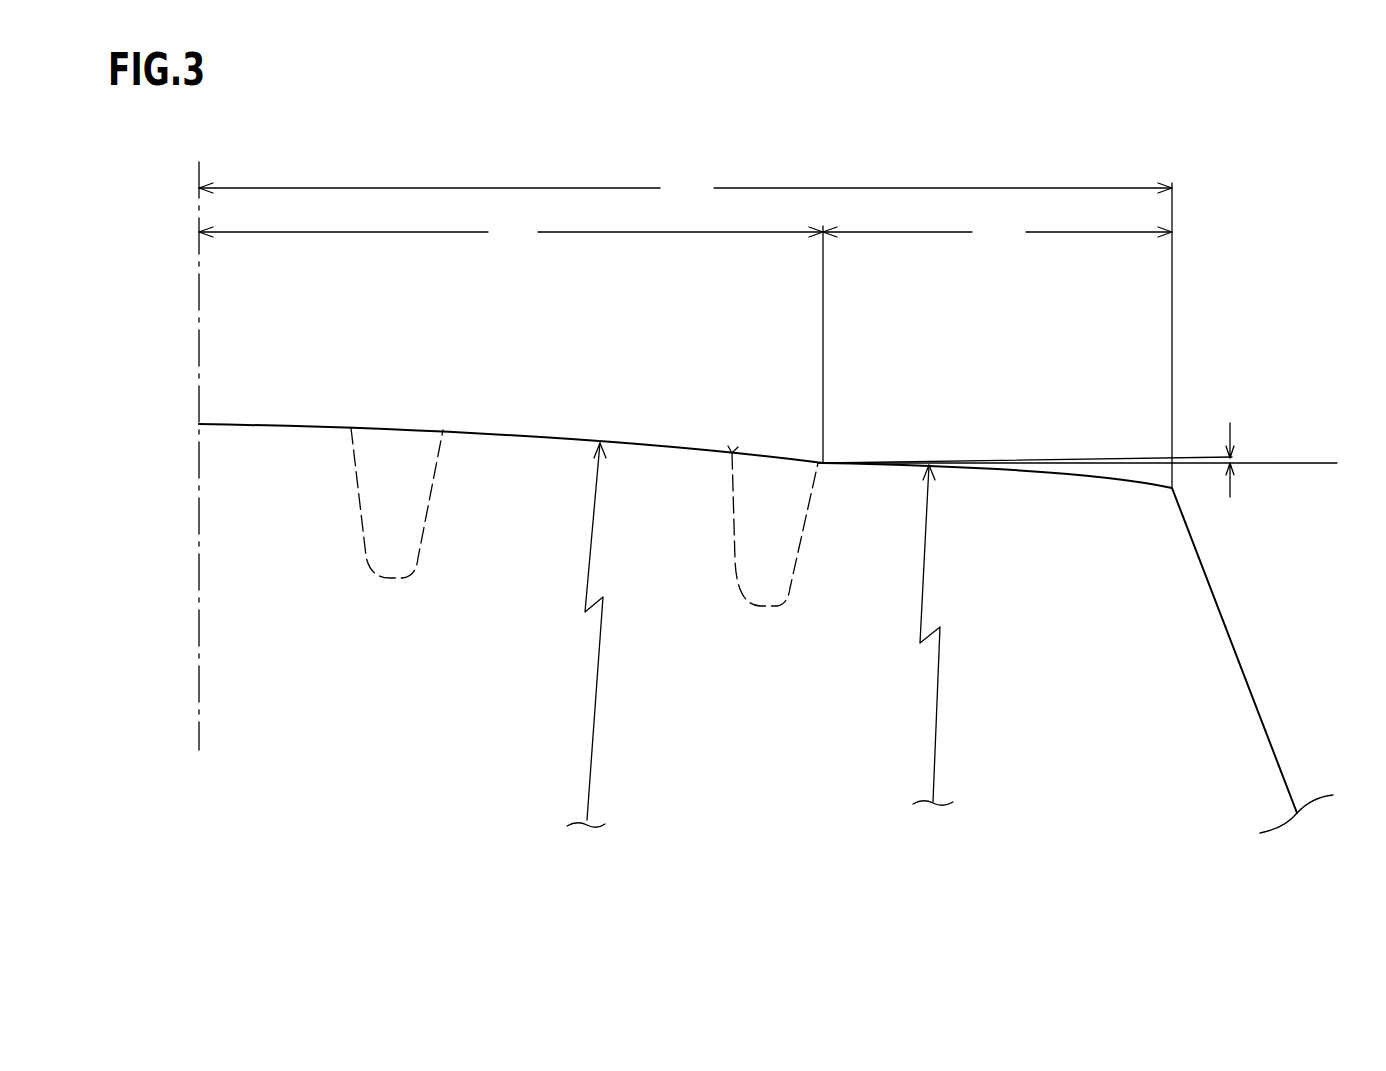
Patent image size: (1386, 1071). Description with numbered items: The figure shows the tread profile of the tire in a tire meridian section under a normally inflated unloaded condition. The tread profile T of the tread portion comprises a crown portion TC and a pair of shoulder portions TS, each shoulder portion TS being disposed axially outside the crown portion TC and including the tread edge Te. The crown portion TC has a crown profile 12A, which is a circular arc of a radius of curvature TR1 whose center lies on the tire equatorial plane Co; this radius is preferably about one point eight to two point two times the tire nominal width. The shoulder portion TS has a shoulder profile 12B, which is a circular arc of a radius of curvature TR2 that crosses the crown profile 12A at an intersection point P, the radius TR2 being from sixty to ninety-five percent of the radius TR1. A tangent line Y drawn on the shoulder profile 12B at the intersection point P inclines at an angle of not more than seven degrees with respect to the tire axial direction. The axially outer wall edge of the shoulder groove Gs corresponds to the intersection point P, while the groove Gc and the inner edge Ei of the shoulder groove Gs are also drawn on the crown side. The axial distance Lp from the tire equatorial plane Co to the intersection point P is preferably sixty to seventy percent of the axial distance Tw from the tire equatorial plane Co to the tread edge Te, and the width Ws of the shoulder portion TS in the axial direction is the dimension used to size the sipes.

The tire equatorial plane Co is at (200, 443).
The axial distance from tire equatorial plane to tread edge Tw is at (685, 330).
The axial distance from tire equatorial plane to intersection point Lp is at (511, 340).
The width of shoulder portion Ws is at (997, 232).
The tread profile T is at (685, 391).
The crown portion TC is at (511, 378).
The crown profile 12A is at (532, 433).
The shoulder portion TS is at (997, 413).
The shoulder profile 12B is at (1052, 472).
The inner edge of shoulder main groove Ei is at (732, 449).
The intersection point P is at (871, 376).
The tangent line Y is at (1307, 463).
The tread edge Te is at (1178, 490).
The crown main groove Gc is at (417, 570).
The shoulder groove Gs is at (787, 600).
The radius of curvature of crown profile TR1 is at (593, 748).
The radius of curvature of shoulder profile TR2 is at (937, 730).